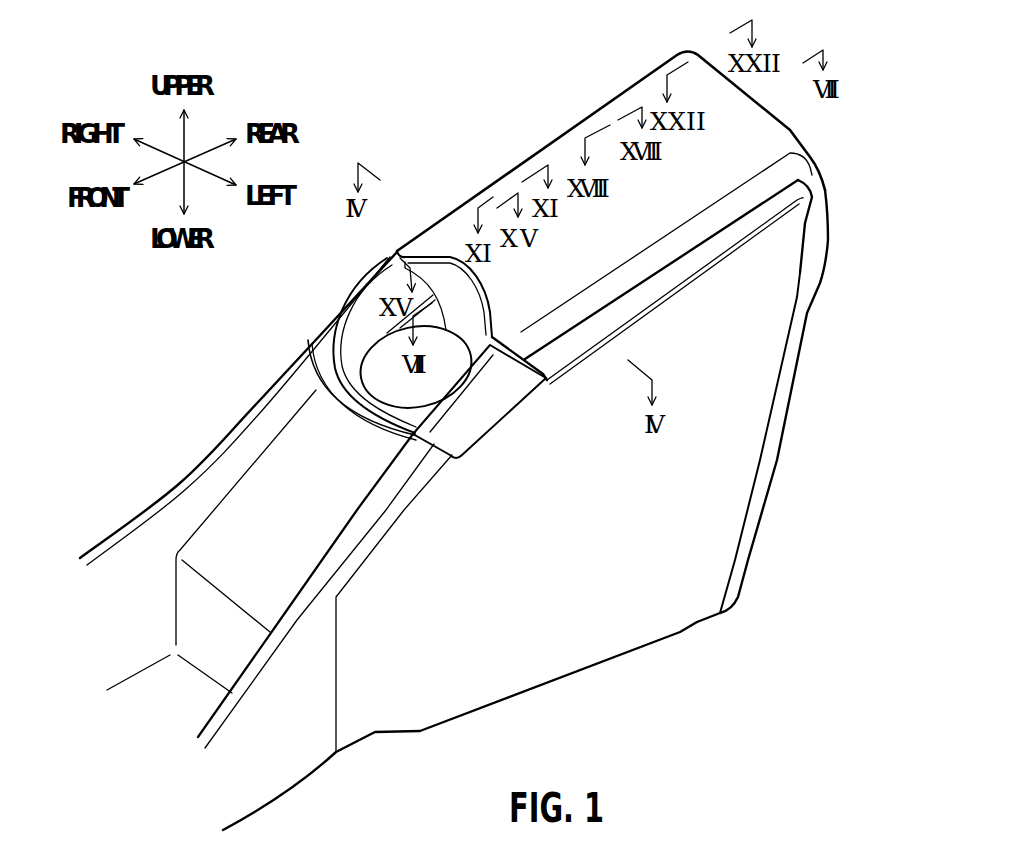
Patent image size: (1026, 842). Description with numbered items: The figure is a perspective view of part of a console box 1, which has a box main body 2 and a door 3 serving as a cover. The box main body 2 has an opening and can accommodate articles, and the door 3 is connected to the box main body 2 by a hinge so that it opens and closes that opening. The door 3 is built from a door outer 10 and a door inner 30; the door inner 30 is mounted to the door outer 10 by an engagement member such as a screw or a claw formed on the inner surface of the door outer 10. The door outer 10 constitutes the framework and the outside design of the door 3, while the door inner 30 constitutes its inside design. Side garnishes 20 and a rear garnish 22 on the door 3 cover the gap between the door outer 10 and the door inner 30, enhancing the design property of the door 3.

The console box 1 is at (413, 155).
The box main body 2 is at (789, 442).
The door 3 is at (494, 166).
The door outer 10 is at (768, 130).
The side garnish 20 is at (783, 198).
The rear garnish 22 is at (818, 170).
The door inner 30 is at (760, 236).